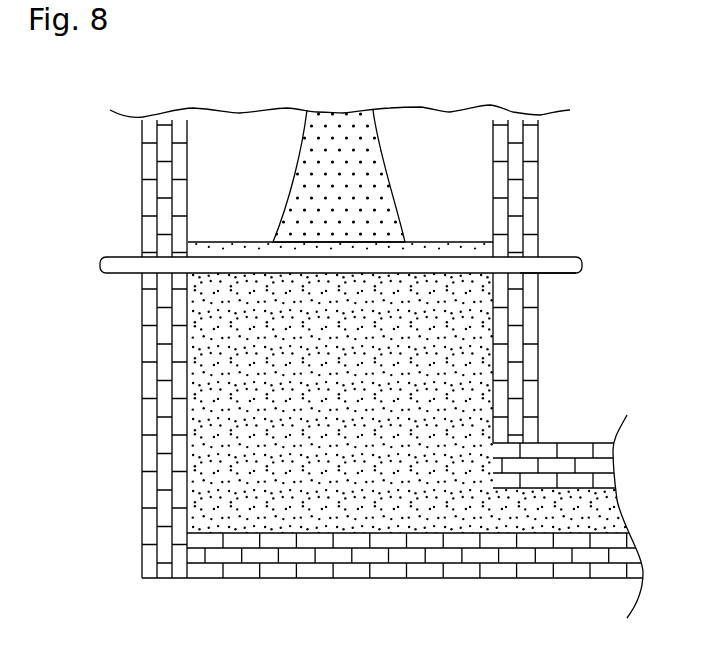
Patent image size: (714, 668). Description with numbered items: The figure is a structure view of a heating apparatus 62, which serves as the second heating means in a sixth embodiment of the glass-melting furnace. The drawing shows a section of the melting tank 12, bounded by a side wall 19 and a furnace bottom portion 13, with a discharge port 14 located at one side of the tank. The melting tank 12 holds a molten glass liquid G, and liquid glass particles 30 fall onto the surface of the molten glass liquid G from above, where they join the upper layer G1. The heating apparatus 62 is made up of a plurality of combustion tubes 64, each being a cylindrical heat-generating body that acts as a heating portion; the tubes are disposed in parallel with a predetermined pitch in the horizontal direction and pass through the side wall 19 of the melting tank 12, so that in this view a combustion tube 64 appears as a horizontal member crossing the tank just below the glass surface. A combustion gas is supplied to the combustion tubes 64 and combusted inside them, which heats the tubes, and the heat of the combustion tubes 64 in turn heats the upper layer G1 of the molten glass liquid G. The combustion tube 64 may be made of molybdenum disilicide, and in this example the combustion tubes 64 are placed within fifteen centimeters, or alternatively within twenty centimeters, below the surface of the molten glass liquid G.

The melting tank 12 is at (540, 154).
The furnace bottom portion 13 is at (399, 555).
The discharge port 14 is at (578, 452).
The side wall 19 is at (500, 178).
The liquid glass particles 30 is at (362, 148).
The heating apparatus 62 is at (550, 249).
The combustion tube 64 is at (558, 273).
The molten glass liquid G is at (340, 510).
The upper layer of molten glass liquid G1 is at (303, 247).